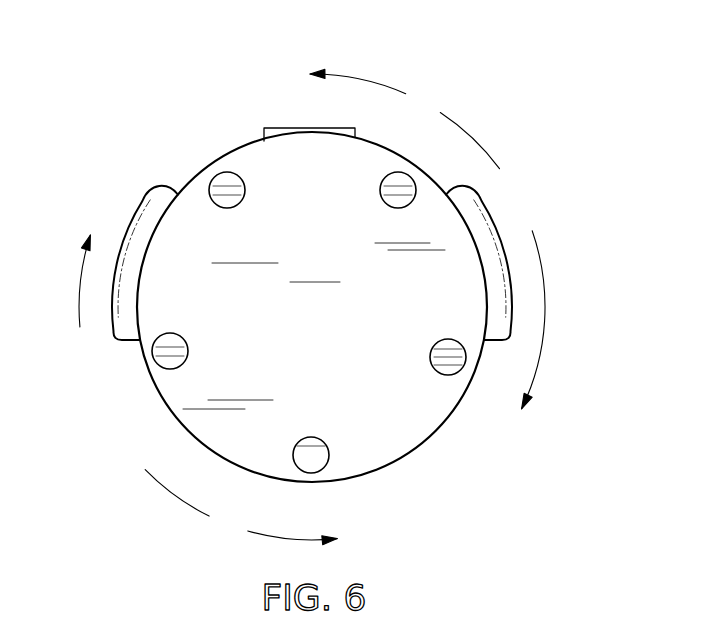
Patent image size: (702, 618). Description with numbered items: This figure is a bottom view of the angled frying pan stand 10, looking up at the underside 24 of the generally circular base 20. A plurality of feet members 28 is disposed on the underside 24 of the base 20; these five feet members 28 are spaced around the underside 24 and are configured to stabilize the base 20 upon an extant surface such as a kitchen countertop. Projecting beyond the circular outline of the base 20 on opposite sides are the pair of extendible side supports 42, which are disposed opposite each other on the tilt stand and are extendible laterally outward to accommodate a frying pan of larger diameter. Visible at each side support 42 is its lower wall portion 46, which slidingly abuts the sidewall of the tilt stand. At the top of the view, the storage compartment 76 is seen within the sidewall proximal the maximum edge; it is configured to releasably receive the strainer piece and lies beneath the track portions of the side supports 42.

The angled frying pan stand 10 is at (523, 100).
The base 20 is at (373, 160).
The underside 24 is at (328, 362).
The feet members 28 is at (163, 352).
The extendible side supports 42 is at (132, 210).
The lower wall portion 46 is at (130, 248).
The storage compartment 76 is at (287, 127).